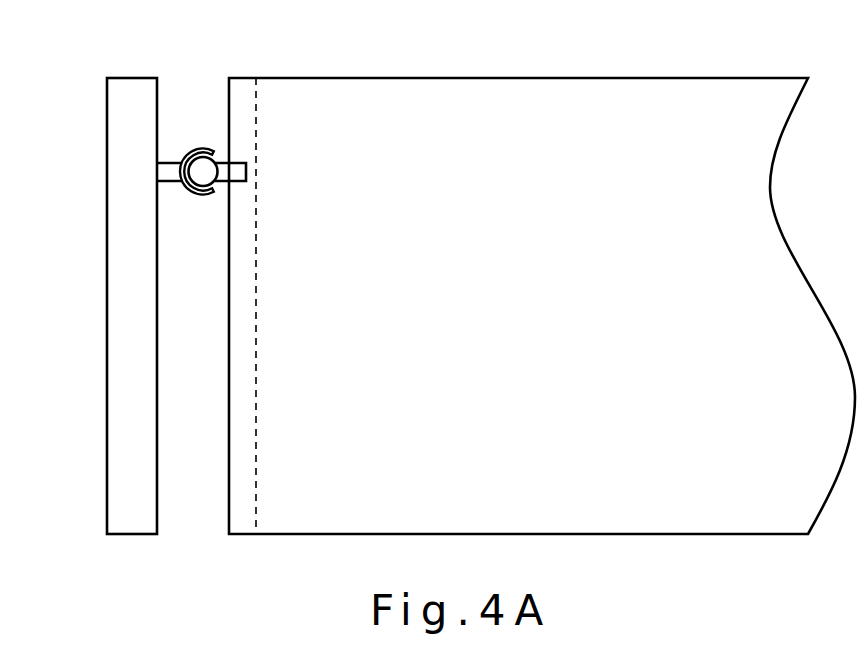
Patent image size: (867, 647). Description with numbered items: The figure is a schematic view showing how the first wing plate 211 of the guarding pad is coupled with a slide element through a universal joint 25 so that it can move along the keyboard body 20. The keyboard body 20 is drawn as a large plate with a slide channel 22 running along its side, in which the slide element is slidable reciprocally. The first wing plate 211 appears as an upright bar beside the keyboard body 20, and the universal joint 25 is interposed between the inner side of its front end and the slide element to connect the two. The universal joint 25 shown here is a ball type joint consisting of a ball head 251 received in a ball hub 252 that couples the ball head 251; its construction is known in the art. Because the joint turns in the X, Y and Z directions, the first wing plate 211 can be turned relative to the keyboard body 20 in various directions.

The keyboard body 20 is at (547, 88).
The slide channel 22 is at (238, 88).
The first wing plate 211 is at (109, 269).
The universal joint 25 is at (201, 191).
The ball head 251 is at (204, 174).
The ball hub 252 is at (205, 196).